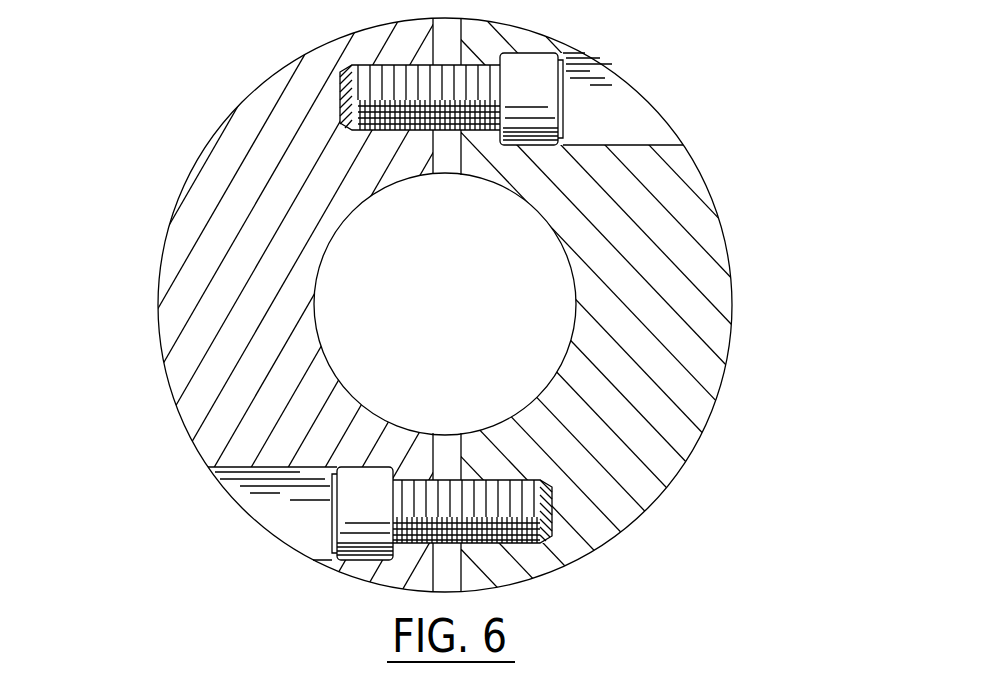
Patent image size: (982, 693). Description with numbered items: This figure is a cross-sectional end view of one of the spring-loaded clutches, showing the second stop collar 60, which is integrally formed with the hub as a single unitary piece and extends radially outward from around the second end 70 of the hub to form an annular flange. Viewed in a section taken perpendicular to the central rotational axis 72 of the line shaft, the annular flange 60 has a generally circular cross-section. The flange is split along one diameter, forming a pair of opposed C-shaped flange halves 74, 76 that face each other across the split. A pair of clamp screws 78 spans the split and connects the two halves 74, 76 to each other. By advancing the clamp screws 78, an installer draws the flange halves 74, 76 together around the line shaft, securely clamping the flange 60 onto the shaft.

The second stop collar 60 is at (653, 207).
The second end of the hub 70 is at (327, 250).
The central rotational axis 72 is at (445, 305).
The flange half 74 is at (195, 274).
The flange half 76 is at (710, 280).
The clamp screws 78 is at (525, 73).